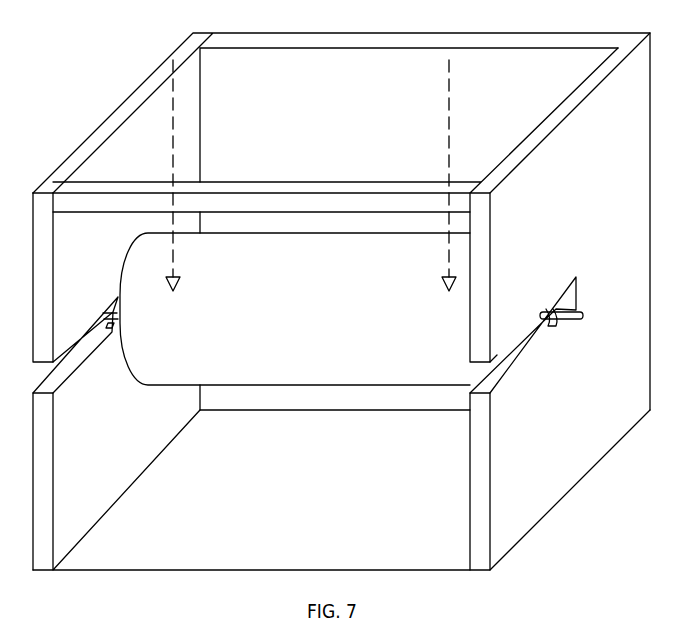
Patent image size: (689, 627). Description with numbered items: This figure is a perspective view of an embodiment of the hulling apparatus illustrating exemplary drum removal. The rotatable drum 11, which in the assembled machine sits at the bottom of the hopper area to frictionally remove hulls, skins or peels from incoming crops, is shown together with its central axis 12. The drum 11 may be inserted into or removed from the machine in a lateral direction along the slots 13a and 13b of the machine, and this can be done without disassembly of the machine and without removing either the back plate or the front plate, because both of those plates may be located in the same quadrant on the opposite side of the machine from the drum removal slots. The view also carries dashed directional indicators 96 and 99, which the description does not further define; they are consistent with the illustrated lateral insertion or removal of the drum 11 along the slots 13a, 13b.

The rotatable drum 11 is at (330, 360).
The central axis 12 is at (568, 321).
The slot 13a is at (47, 370).
The slot 13b is at (483, 370).
The insertion direction arrow 96 is at (449, 115).
The insertion direction arrow 99 is at (173, 128).